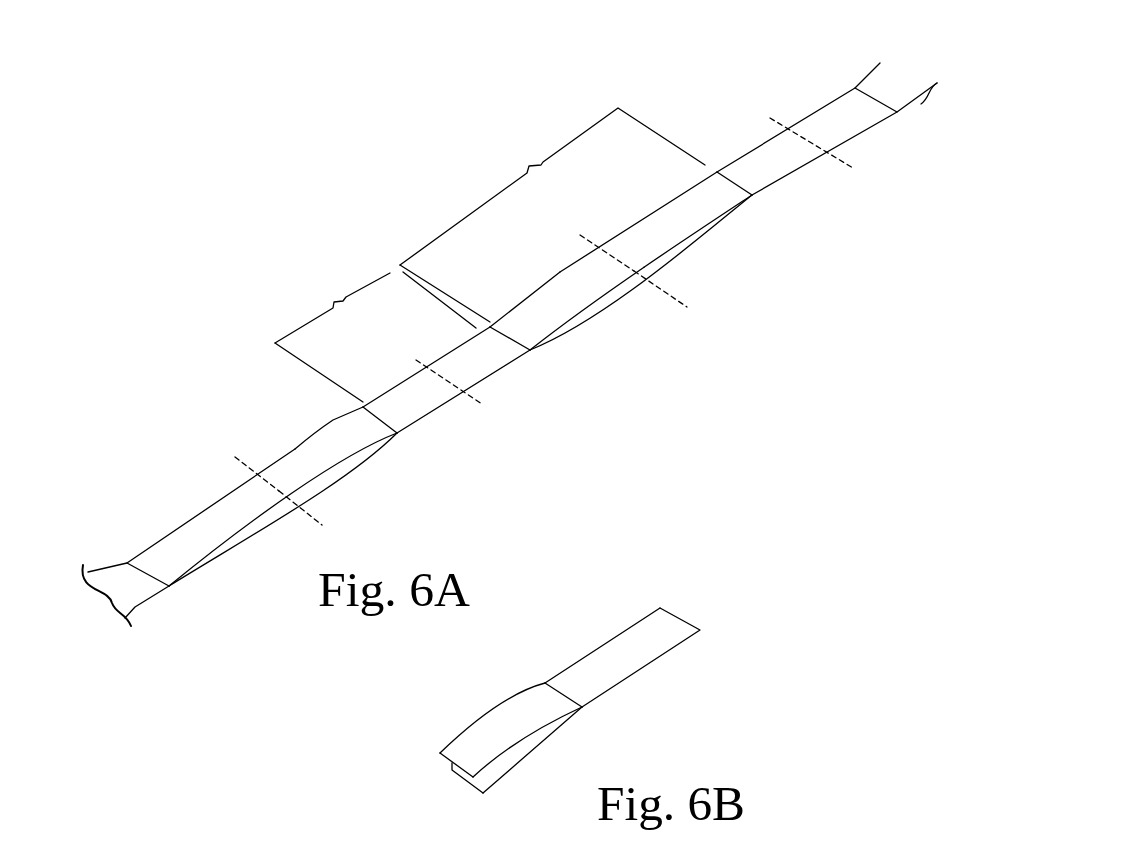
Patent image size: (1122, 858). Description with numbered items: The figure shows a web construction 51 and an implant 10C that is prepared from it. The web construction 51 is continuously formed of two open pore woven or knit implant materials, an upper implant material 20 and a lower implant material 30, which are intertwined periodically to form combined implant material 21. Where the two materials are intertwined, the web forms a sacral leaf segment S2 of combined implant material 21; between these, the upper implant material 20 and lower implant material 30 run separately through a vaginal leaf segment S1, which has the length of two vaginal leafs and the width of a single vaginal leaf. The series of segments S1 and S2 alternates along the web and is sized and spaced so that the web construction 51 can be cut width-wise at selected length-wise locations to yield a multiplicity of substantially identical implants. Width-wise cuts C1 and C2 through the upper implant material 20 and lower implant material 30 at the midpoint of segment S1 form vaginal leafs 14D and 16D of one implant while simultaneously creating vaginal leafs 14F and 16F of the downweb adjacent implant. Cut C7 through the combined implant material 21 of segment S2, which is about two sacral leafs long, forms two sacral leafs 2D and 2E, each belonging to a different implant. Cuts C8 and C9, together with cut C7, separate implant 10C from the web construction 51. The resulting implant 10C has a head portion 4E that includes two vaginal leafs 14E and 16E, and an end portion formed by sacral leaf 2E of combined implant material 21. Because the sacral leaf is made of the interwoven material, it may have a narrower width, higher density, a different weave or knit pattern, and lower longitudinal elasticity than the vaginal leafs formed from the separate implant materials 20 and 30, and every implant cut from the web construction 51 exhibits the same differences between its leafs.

In FIG. 6A, the upper implant material 20 is at (257, 483).
In FIG. 6A, the lower implant material 30 is at (328, 485).
In FIG. 6A, the combined implant material 21 is at (137, 608).
In FIG. 6B, the combined implant material 21 is at (647, 623).
In FIG. 6A, the vaginal leaf 14E is at (312, 430).
In FIG. 6B, the vaginal leaf 14E is at (480, 735).
In FIG. 6A, the vaginal leaf 16E is at (370, 455).
In FIG. 6B, the vaginal leaf 16E is at (508, 767).
In FIG. 6A, the vaginal leaf 14D is at (543, 287).
In FIG. 6A, the vaginal leaf 16D is at (587, 310).
In FIG. 6A, the vaginal leaf 14F is at (650, 218).
In FIG. 6A, the vaginal leaf 16F is at (707, 232).
In FIG. 6A, the sacral leaf 2E is at (427, 405).
In FIG. 6B, the sacral leaf 2E is at (633, 669).
In FIG. 6A, the sacral leaf 2D is at (502, 357).
In FIG. 6A, the cut C7 is at (407, 354).
In FIG. 6A, the cut C8 is at (226, 452).
In FIG. 6A, the cut C9 is at (331, 534).
In FIG. 6A, the cut C1 is at (681, 295).
In FIG. 6A, the cut C2 is at (679, 308).
In FIG. 6A, the web construction 51 is at (758, 328).
In FIG. 6A, the vaginal leaf segment S1 is at (552, 218).
In FIG. 6A, the sacral leaf segment S2 is at (332, 336).
In FIG. 6B, the implant 10C is at (516, 665).
In FIG. 6B, the head portion 4E is at (571, 754).